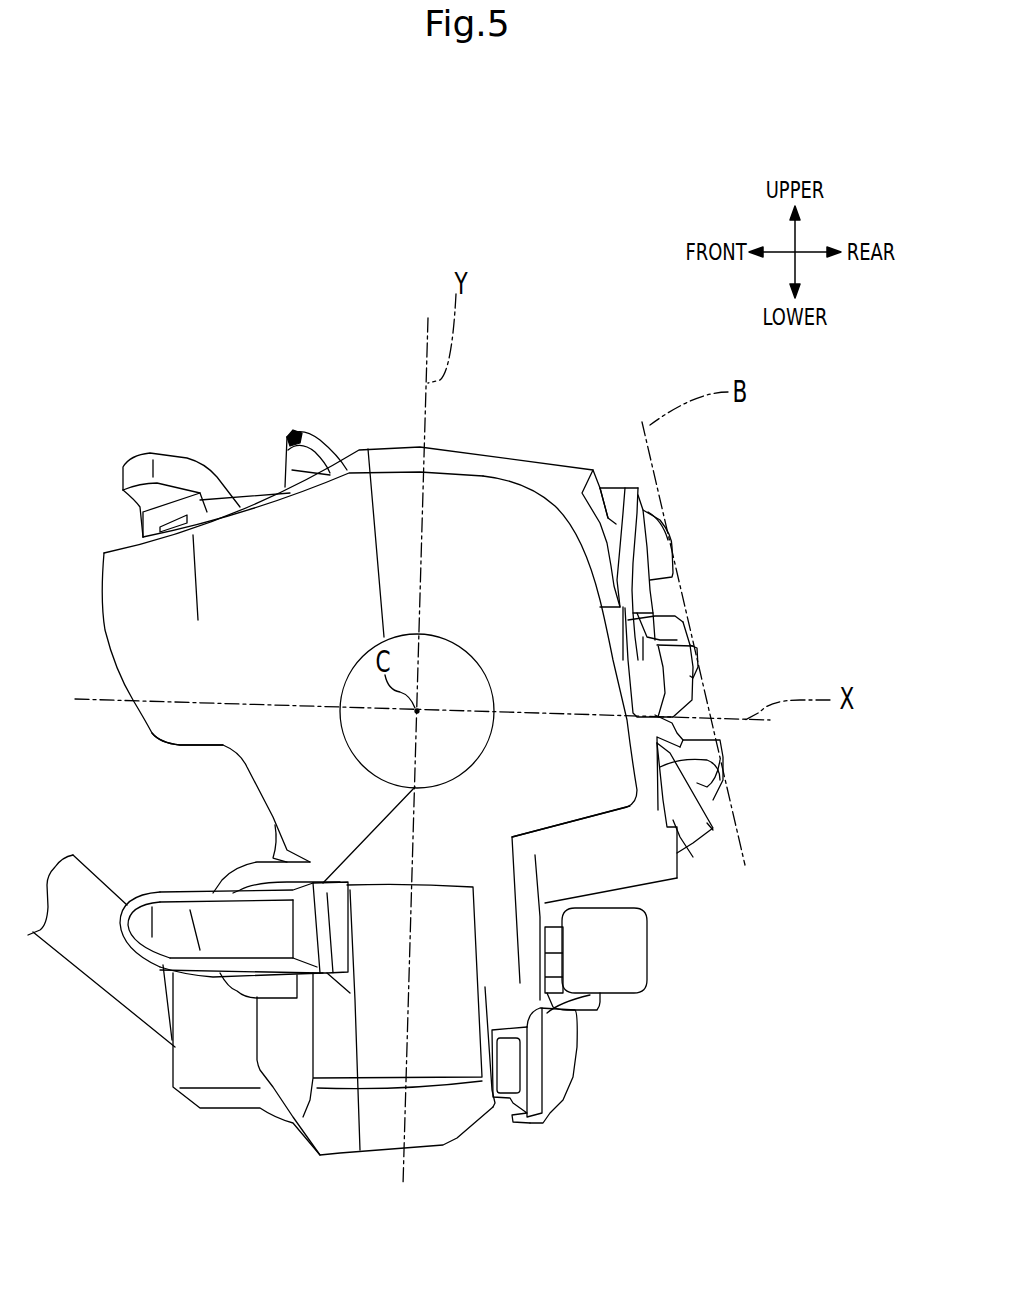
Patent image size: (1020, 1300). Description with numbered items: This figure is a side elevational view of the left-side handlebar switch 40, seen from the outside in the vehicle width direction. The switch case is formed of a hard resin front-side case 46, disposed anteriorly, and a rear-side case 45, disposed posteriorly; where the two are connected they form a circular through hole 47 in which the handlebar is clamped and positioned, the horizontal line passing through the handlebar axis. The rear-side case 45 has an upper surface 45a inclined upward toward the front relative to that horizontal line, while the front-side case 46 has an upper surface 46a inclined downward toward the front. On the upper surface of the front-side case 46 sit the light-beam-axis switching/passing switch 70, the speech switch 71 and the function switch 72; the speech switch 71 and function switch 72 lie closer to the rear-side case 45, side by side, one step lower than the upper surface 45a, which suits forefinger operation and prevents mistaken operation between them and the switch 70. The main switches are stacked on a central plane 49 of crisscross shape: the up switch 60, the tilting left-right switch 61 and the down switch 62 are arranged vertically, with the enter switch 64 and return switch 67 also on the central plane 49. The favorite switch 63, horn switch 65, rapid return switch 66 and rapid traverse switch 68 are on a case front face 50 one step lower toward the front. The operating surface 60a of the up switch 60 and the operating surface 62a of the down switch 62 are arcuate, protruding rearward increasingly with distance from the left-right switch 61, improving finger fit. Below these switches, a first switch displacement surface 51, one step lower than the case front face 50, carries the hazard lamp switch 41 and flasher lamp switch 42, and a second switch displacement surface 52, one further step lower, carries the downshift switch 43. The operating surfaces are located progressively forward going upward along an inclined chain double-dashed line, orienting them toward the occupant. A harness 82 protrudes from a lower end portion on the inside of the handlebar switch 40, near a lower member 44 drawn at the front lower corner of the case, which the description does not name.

The handlebar switch 40 is at (562, 424).
The hazard lamp switch 41 is at (588, 1003).
The flasher lamp switch 42 is at (628, 948).
The downshift switch 43 is at (558, 1077).
The knob 44 is at (170, 940).
The rear-side case 45 is at (465, 463).
The upper surface 45a is at (496, 444).
The front-side case 46 is at (257, 517).
The upper surface 46a is at (270, 488).
The circular through hole 47 is at (380, 737).
The central plane 49 is at (688, 864).
The case front face 50 is at (593, 467).
The first switch displacement surface 51 is at (568, 1012).
The second switch displacement surface 52 is at (523, 1120).
The up switch 60 is at (628, 485).
The operating surface 60a is at (640, 505).
The left-right switch 61 is at (677, 663).
The down switch 62 is at (692, 843).
The operating surface 62a is at (718, 826).
The favorite switch 63 is at (625, 553).
The enter switch 64 is at (647, 633).
The horn switch 65 is at (663, 768).
The rapid return switch 66 is at (666, 523).
The return switch 67 is at (680, 700).
The rapid traverse switch 68 is at (727, 783).
The light-beam-axis switching/passing switch 70 is at (167, 468).
The speech switch 71 is at (330, 450).
The function switch 72 is at (328, 445).
The harness 82 is at (90, 953).